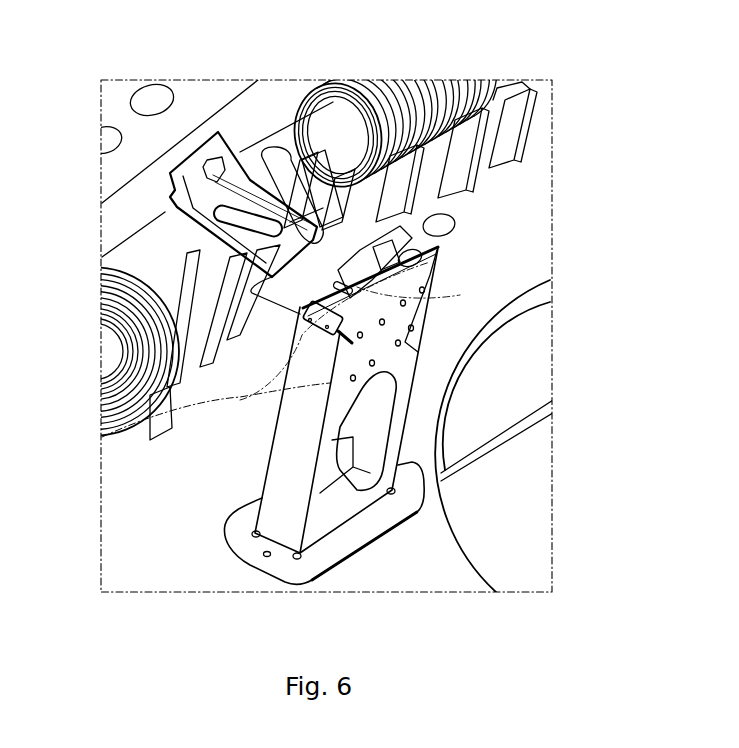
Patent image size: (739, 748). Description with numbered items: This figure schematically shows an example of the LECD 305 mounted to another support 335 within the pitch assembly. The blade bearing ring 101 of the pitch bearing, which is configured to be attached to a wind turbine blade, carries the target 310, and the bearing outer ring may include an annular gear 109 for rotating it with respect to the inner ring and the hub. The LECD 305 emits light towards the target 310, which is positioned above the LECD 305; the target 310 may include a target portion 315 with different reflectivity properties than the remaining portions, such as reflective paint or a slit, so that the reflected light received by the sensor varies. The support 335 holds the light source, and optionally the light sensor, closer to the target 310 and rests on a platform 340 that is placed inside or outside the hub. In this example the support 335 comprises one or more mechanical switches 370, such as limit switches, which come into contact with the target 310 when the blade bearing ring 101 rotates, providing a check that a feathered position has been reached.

The blade bearing ring 101 is at (217, 90).
The annular gear 109 is at (500, 112).
The target 310 is at (292, 243).
The mechanical switch 370 is at (455, 232).
The target portion 315 is at (433, 273).
The LECD 305 is at (240, 398).
The support 335 is at (297, 553).
The platform 340 is at (153, 540).